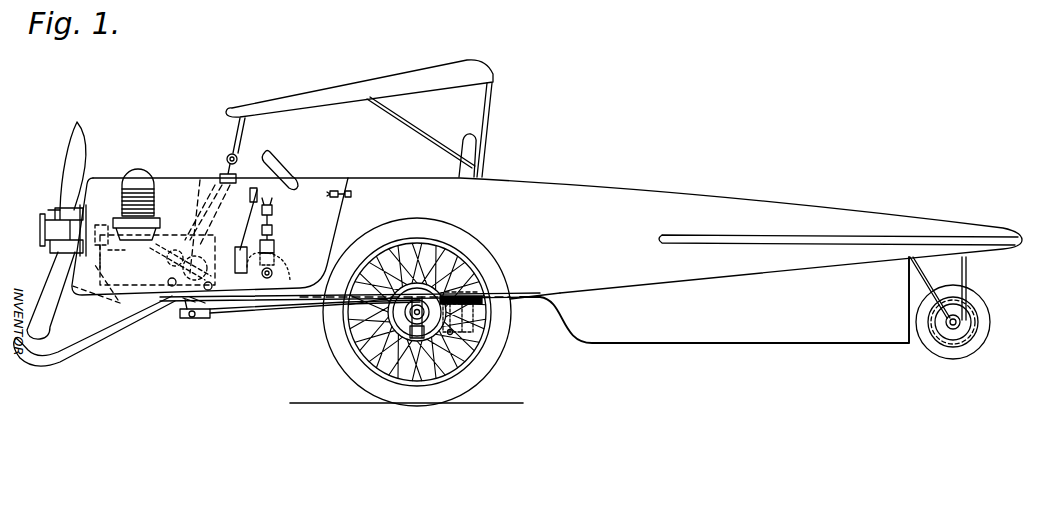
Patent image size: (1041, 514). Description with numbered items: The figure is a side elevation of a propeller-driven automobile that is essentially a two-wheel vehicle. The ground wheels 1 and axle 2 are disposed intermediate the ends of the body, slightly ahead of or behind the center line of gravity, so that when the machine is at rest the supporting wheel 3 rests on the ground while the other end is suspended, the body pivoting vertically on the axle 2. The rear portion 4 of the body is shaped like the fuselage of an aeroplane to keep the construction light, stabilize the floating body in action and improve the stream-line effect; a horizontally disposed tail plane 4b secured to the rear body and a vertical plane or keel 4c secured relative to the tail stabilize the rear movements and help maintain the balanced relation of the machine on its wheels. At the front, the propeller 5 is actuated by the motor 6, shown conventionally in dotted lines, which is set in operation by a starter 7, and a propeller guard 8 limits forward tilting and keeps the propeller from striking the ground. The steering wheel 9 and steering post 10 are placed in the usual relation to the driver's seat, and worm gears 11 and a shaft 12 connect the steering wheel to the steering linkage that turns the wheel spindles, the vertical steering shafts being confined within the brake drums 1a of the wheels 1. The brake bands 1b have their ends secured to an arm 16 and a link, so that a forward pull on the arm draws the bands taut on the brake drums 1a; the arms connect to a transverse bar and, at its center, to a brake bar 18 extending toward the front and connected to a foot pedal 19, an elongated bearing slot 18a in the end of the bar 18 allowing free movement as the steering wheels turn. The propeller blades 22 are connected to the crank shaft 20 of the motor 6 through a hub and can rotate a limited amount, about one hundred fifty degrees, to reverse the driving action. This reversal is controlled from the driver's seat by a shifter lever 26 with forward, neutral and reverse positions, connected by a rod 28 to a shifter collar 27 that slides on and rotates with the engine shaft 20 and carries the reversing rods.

The ground wheels 1 is at (399, 312).
The brake drums 1a is at (432, 320).
The brake bands 1b is at (352, 318).
The axle 2 is at (357, 367).
The supporting wheel 3 is at (988, 305).
The rear portion of the body 4 is at (632, 207).
The tail plane 4b is at (777, 237).
The vertical plane or keel 4c is at (682, 330).
The propeller 5 is at (85, 128).
The motor 6 is at (150, 212).
The starter 7 is at (200, 193).
The propeller guard 8 is at (70, 353).
The steering wheel 9 is at (273, 152).
The steering post 10 is at (262, 168).
The worm gears 11 is at (157, 310).
The shaft 12 is at (220, 312).
The arm 16 is at (477, 328).
The brake bar 18 is at (262, 307).
The elongated bearing slot 18a is at (445, 290).
The foot pedal 19 is at (272, 237).
The crank shaft 20 is at (50, 257).
The propeller blades 22 is at (40, 327).
The shifter lever 26 is at (275, 217).
The shifter collar 27 is at (103, 183).
The rod 28 is at (120, 303).